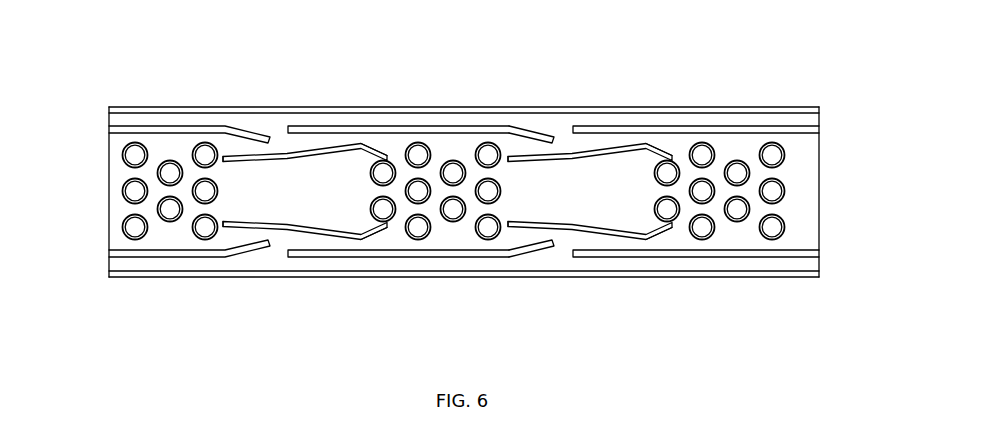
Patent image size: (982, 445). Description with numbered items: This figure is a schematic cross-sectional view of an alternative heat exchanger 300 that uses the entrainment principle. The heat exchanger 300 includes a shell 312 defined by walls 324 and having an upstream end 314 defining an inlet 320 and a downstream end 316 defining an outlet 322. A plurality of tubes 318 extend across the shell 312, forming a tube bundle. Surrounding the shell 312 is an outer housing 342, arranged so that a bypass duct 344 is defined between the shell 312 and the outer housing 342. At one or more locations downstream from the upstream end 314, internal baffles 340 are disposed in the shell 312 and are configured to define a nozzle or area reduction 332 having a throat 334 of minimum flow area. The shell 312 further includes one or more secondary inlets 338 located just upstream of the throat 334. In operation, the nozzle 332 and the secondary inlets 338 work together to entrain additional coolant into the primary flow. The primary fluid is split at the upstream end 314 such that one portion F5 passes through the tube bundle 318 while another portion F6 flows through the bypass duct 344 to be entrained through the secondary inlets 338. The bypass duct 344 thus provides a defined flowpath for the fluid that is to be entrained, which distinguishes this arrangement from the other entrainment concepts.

The heat exchanger 300 is at (432, 80).
The shell 312 is at (641, 128).
The upstream end 314 is at (110, 281).
The downstream end 316 is at (813, 279).
The tubes 318 is at (200, 239).
The inlet 320 is at (110, 252).
The outlet 322 is at (822, 253).
The walls 324 is at (379, 132).
The nozzle 332 is at (306, 163).
The throat 334 is at (359, 149).
The secondary inlets 338 is at (252, 133).
The internal baffles 340 is at (247, 162).
The outer housing 342 is at (746, 107).
The bypass duct 344 is at (821, 120).
The primary fluid portion passing through tube bundle F5 is at (92, 193).
The primary fluid portion to be entrained F6 is at (108, 121).